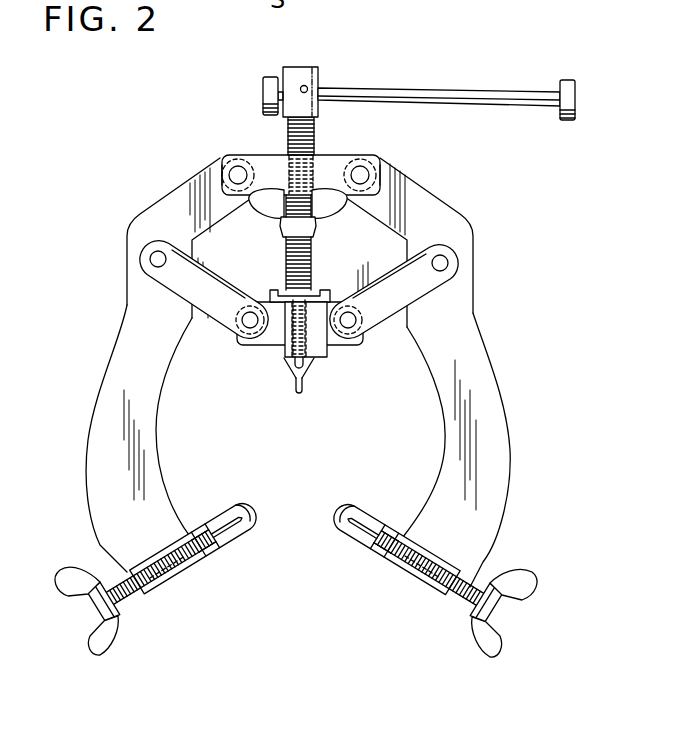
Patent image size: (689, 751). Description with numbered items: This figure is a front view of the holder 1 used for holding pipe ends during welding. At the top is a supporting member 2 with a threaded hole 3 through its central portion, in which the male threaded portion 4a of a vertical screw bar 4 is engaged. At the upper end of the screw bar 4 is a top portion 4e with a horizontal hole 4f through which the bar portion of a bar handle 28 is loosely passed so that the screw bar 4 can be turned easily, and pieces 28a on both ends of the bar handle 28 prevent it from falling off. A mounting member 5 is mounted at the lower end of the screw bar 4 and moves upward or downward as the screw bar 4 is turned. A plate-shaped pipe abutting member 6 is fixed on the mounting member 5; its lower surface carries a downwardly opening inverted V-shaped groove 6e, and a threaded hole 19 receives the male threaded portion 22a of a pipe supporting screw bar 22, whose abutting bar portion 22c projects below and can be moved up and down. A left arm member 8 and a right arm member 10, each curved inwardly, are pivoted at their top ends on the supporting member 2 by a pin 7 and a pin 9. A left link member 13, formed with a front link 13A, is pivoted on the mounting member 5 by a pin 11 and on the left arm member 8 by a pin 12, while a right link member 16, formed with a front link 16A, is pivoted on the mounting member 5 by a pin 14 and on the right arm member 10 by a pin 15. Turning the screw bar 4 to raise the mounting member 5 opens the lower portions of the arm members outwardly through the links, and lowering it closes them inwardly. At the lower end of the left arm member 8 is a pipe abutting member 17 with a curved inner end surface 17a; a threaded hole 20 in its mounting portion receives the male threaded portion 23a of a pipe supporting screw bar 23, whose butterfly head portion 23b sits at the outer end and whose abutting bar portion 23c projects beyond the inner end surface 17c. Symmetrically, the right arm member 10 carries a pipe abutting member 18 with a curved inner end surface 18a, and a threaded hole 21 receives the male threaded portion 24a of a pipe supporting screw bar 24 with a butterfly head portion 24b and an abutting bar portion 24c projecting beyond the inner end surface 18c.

The holder 1 is at (172, 175).
The supporting member 2 is at (367, 157).
The threaded hole 3 is at (313, 177).
The screw bar 4 is at (307, 67).
The male threaded portion 4a is at (290, 150).
The top portion 4e is at (285, 73).
The horizontal hole 4f is at (308, 88).
The mounting member 5 is at (350, 347).
The pipe abutting member 6 is at (282, 370).
The inverted V-shaped groove 6e is at (296, 382).
The pin 7 is at (238, 175).
The left arm member 8 is at (108, 352).
The pin 9 is at (362, 176).
The right arm member 10 is at (510, 437).
The pin 11 is at (234, 330).
The pin 12 is at (158, 259).
The left link member 13 is at (155, 284).
The front link 13A is at (206, 275).
The pin 14 is at (360, 336).
The pin 15 is at (441, 261).
The right link member 16 is at (405, 305).
The front link 16A is at (388, 255).
The pipe abutting member 17 is at (177, 590).
The inner end surface 17a is at (250, 517).
The inner end surface 17c is at (208, 548).
The pipe abutting member 18 is at (400, 570).
The inner end surface 18a is at (346, 523).
The inner end surface 18c is at (387, 557).
The threaded hole 19 is at (289, 332).
The threaded hole 20 is at (162, 587).
The threaded hole 21 is at (443, 597).
The pipe supporting screw bar 22 is at (362, 260).
The male threaded portion 22a is at (310, 362).
The abutting bar portion 22c is at (303, 388).
The pipe supporting screw bar 23 is at (107, 570).
The male threaded portion 23a is at (193, 570).
The butterfly head portion 23b is at (110, 642).
The abutting bar portion 23c is at (238, 504).
The pipe supporting screw bar 24 is at (477, 585).
The male threaded portion 24a is at (420, 582).
The butterfly head portion 24b is at (490, 652).
The abutting bar portion 24c is at (351, 508).
The bar handle 28 is at (463, 91).
The pieces for preventing falling-off 28a is at (266, 90).